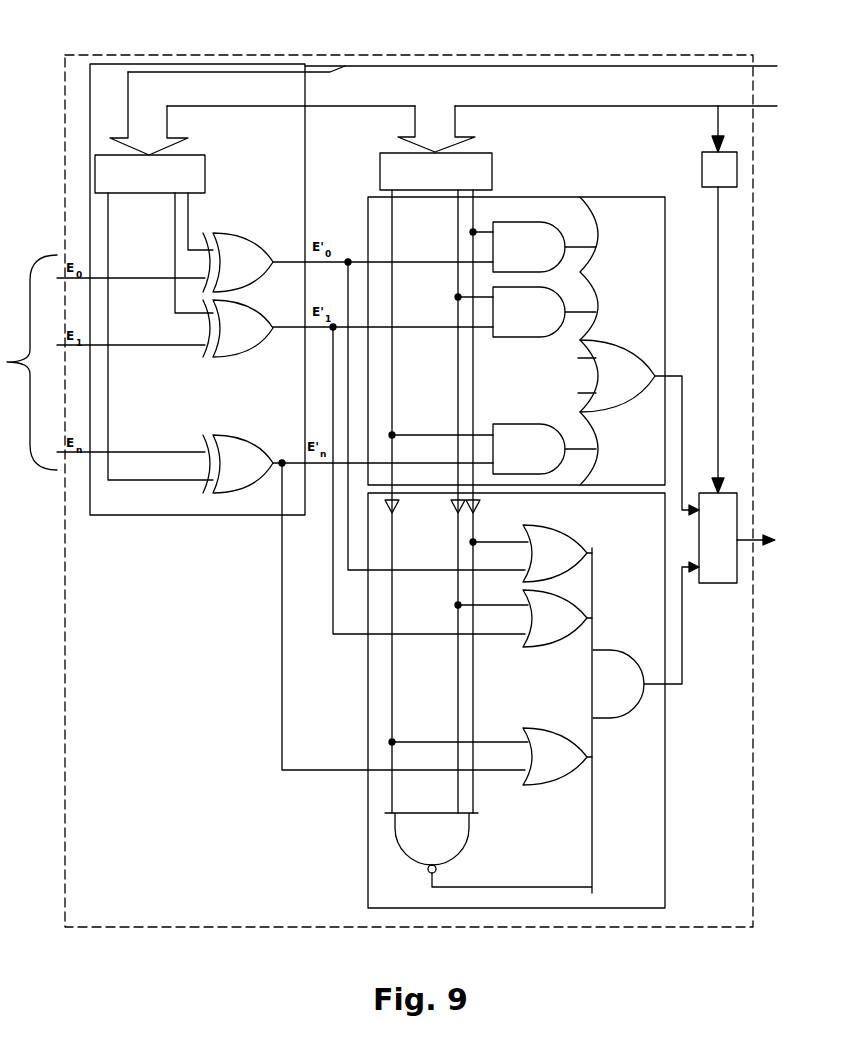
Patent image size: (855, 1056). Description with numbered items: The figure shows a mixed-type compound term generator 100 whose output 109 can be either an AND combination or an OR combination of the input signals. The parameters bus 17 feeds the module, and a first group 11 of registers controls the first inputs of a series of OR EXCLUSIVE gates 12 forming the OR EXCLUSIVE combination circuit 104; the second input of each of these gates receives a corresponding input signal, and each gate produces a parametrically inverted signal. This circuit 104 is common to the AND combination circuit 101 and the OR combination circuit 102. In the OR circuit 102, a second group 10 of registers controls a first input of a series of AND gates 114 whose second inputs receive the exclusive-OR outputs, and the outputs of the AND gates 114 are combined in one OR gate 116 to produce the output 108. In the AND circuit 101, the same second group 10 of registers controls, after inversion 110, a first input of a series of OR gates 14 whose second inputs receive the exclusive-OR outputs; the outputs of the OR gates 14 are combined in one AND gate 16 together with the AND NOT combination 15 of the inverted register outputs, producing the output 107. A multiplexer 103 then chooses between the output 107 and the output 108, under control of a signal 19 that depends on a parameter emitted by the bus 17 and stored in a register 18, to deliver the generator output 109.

The compound term generator 100 is at (103, 55).
The OR EXCLUSIVE combination circuit 104 is at (160, 515).
The parameters bus 17 is at (571, 93).
The first group of registers 11 is at (205, 172).
The second group of registers 10 is at (492, 170).
The OR EXCLUSIVE gates 12 is at (238, 250).
The OR combination circuit 102 is at (637, 206).
The AND gates 114 is at (526, 425).
The OR gate 116 is at (620, 400).
The output of OR combination 108 is at (682, 378).
The AND combination circuit 101 is at (665, 822).
The inversion 110 is at (478, 509).
The OR gates 14 is at (566, 545).
The AND gate 16 is at (620, 708).
The output of AND combination 107 is at (683, 662).
The AND NOT combination 15 is at (410, 836).
The register 18 is at (702, 162).
The control signal 19 is at (713, 241).
The multiplexer 103 is at (707, 577).
The output 109 is at (752, 538).